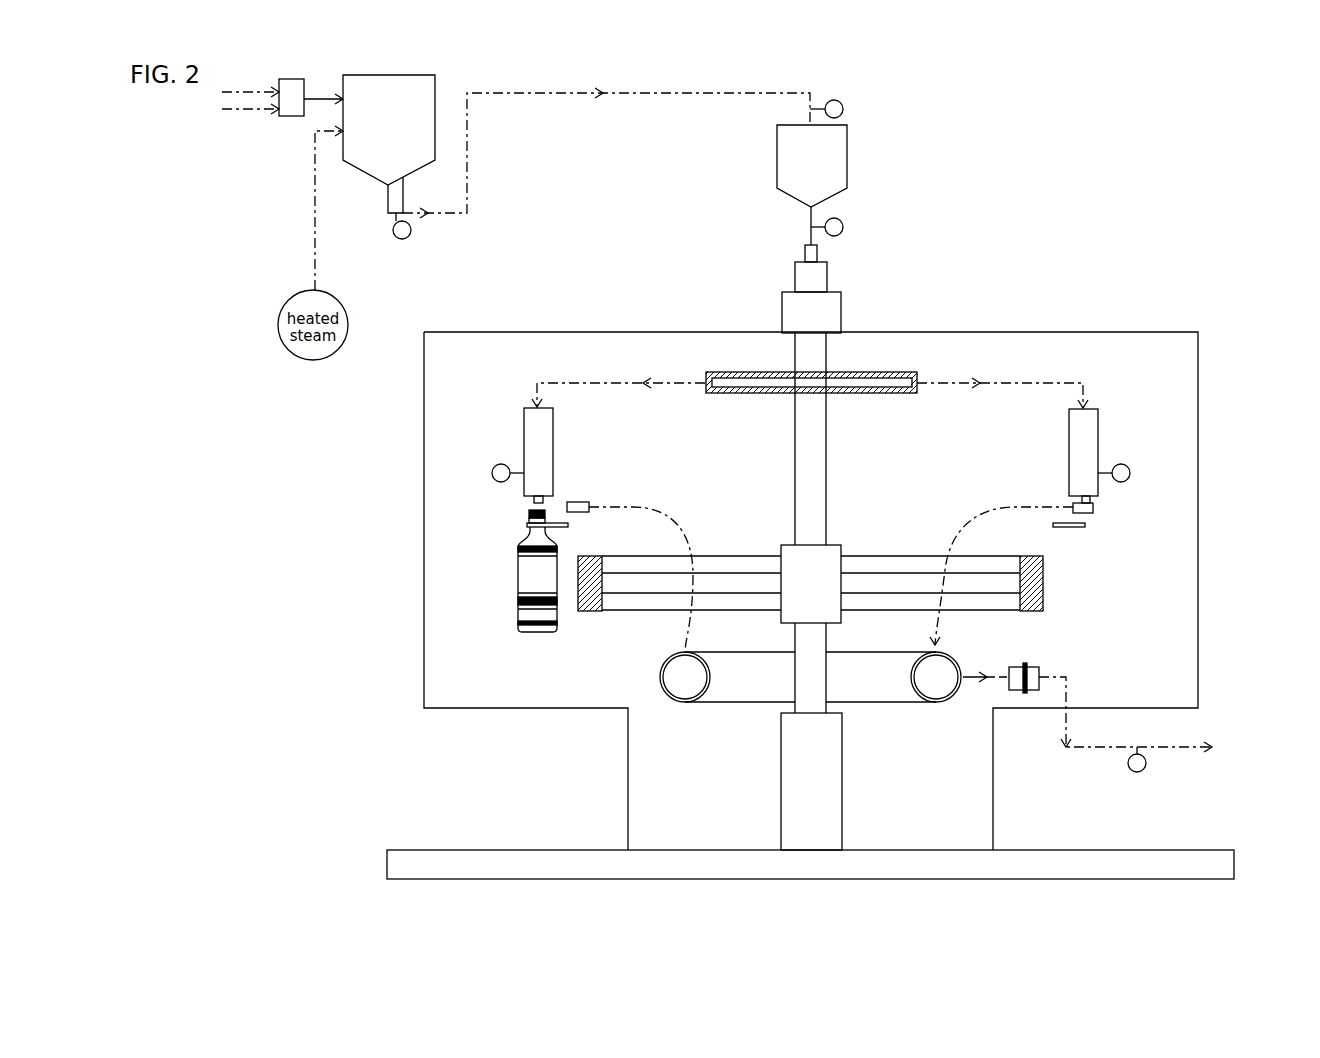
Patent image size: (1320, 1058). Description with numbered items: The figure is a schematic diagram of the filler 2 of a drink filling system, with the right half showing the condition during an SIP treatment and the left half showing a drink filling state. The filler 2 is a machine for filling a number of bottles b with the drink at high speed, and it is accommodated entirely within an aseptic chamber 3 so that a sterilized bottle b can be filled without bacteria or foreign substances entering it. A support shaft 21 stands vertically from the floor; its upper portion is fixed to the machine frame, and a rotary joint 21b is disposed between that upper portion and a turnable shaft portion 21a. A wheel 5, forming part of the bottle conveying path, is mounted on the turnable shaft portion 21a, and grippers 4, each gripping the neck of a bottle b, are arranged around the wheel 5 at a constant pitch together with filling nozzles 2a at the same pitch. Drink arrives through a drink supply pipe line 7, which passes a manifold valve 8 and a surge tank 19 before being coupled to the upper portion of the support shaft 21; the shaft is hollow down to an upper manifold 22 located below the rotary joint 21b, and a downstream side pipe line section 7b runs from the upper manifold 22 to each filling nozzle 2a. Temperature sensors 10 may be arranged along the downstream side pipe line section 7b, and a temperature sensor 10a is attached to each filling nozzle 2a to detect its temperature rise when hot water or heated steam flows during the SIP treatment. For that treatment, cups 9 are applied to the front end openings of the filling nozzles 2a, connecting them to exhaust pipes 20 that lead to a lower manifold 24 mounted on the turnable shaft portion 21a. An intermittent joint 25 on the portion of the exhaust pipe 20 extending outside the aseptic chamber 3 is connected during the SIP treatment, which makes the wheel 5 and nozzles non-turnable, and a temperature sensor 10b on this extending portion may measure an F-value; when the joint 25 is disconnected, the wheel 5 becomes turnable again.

The filler 2 is at (752, 284).
The filling nozzle 2a is at (524, 430).
The aseptic chamber 3 is at (424, 528).
The gripper 4 is at (553, 522).
The wheel 5 is at (1043, 587).
The drink supply pipe line 7 is at (658, 104).
The downstream side pipe line section 7b is at (540, 96).
The manifold valve 8 is at (289, 116).
The cup 9 is at (580, 502).
The temperature sensor 10 is at (402, 240).
The temperature sensor 10a is at (492, 473).
The temperature sensor 10b is at (1137, 773).
The surge tank 19 is at (352, 168).
The exhaust pipe 20 is at (668, 525).
The support shaft 21 is at (781, 743).
The turnable shaft portion 21a is at (827, 497).
The rotary joint 21b is at (841, 313).
The upper manifold 22 is at (867, 394).
The lower manifold 24 is at (885, 703).
The intermittent joint 25 is at (1013, 690).
The bottle b is at (518, 578).